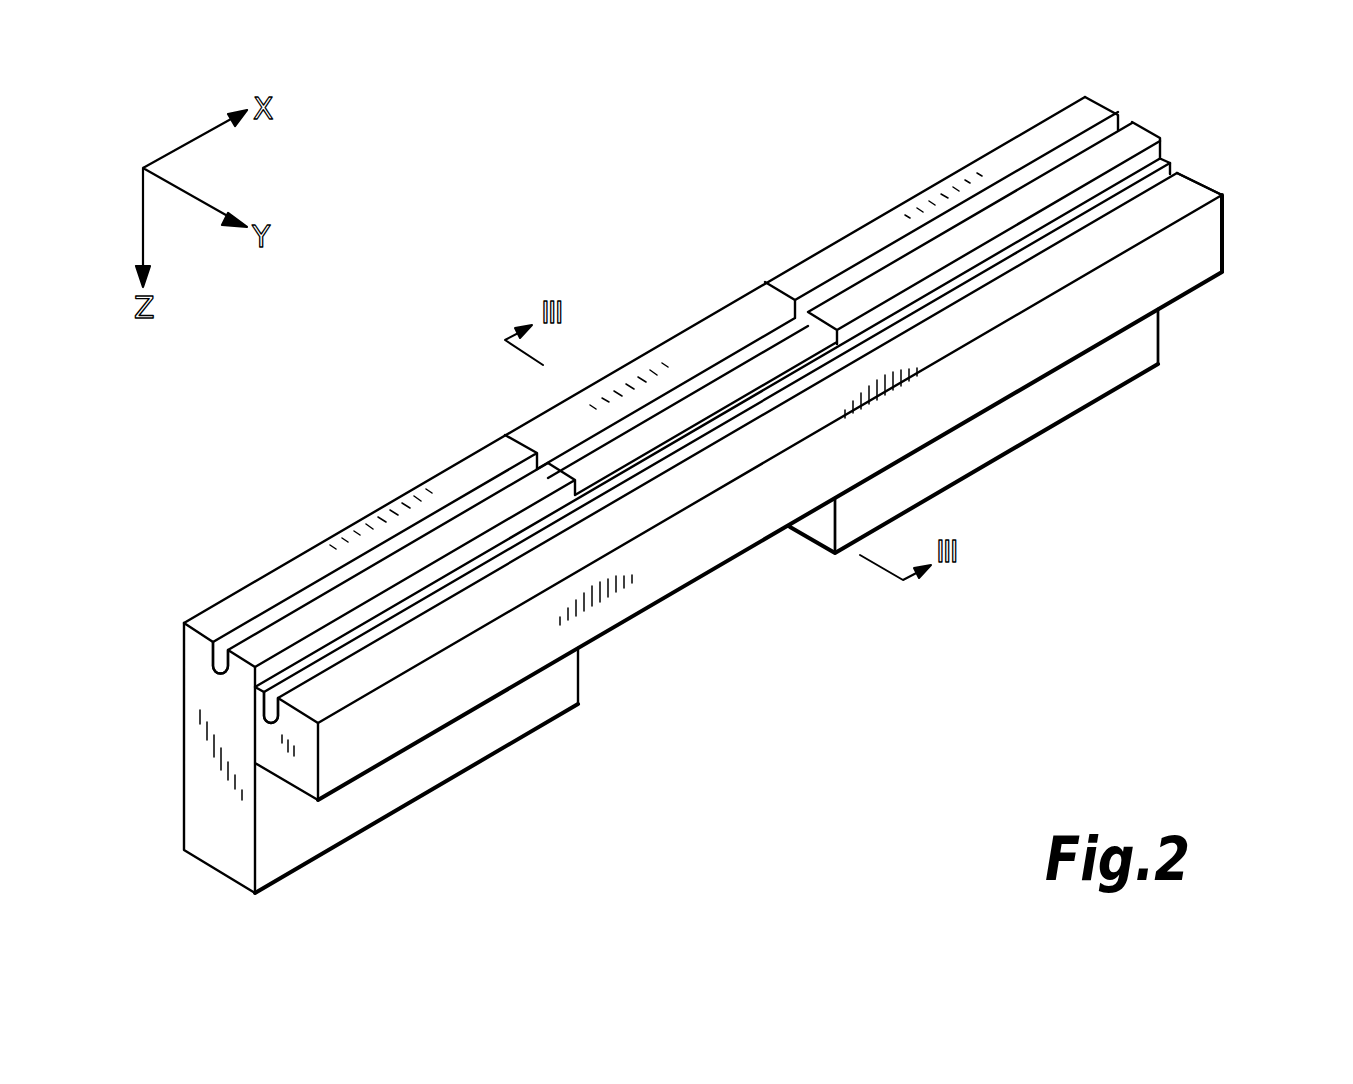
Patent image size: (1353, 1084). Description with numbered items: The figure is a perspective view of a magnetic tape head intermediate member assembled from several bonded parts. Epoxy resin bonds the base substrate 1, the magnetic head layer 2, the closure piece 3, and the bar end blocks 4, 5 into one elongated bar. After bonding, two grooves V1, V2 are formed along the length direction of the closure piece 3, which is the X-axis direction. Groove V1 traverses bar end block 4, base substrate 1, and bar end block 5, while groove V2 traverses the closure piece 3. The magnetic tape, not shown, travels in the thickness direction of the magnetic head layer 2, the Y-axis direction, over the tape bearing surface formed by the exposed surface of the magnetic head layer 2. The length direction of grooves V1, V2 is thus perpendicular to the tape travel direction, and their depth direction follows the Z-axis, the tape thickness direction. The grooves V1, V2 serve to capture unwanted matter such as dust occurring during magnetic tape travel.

The base substrate 1 is at (722, 322).
The magnetic head layer 2 is at (808, 345).
The closure piece 3 is at (1195, 253).
The bar end block 4 is at (370, 530).
The bar end block 5 is at (930, 195).
The groove V1 is at (290, 612).
The groove V2 is at (318, 664).